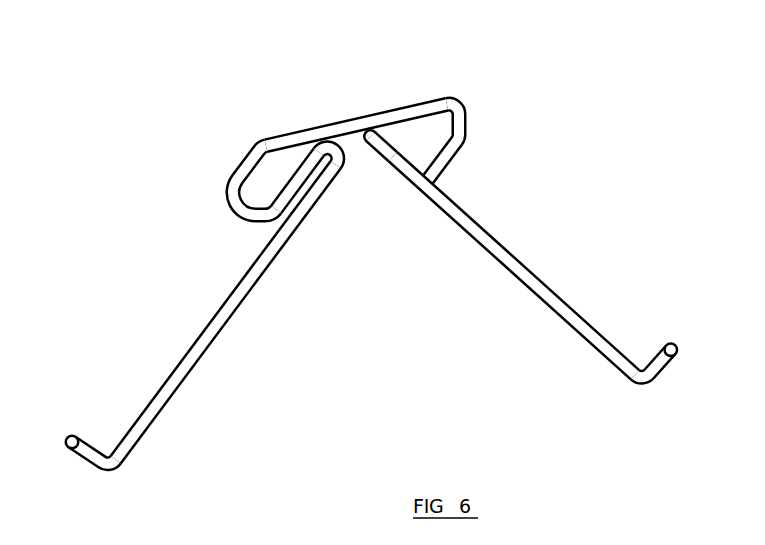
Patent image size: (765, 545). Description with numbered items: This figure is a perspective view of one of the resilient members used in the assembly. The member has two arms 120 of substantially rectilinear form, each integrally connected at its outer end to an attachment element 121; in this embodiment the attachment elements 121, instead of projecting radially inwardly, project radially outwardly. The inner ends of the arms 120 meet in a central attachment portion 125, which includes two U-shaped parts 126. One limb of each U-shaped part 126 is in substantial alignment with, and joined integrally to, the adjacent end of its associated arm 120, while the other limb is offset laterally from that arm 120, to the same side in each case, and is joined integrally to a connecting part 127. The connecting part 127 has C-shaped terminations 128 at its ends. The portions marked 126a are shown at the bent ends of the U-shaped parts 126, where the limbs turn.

The arm 120 is at (268, 278).
The attachment element 121 is at (92, 442).
The central attachment portion 125 is at (345, 113).
The U-shaped part 126 is at (379, 167).
The bent end portions 126a is at (336, 142).
The connecting part 127 is at (292, 127).
The C-shaped termination 128 is at (229, 182).